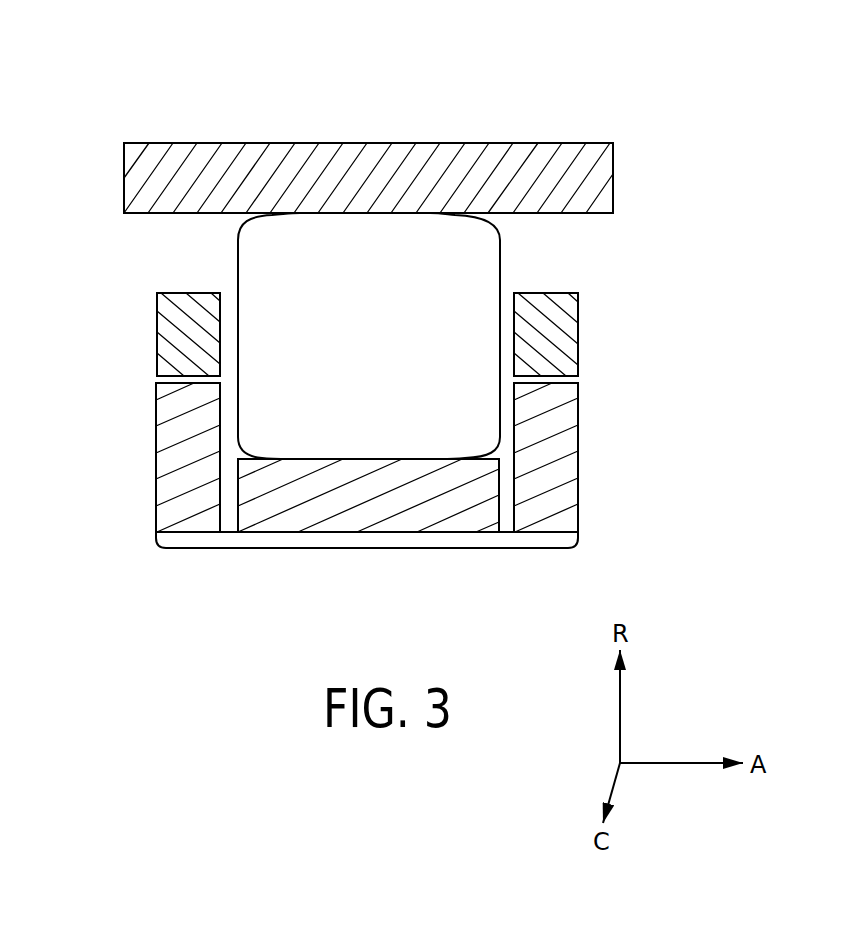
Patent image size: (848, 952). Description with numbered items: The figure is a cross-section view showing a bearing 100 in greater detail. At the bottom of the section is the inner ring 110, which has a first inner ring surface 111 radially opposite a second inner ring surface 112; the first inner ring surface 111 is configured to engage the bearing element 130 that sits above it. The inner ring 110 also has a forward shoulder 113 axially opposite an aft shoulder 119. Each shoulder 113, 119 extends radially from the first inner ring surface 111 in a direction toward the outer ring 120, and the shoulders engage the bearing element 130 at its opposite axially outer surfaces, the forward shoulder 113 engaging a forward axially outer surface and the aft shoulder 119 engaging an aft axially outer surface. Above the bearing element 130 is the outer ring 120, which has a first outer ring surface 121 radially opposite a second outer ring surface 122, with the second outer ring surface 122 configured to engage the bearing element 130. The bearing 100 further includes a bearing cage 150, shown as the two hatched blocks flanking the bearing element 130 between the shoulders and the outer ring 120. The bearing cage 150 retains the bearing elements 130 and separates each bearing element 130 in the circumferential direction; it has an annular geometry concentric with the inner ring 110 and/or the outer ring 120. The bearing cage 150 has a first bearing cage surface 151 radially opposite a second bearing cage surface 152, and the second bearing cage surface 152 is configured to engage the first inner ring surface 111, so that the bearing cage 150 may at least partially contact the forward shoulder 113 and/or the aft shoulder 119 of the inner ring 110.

The bearing 100 is at (150, 92).
The inner ring 110 is at (373, 498).
The first inner ring surface 111 is at (303, 459).
The second inner ring surface 112 is at (449, 548).
The forward shoulder 113 is at (163, 457).
The aft shoulder 119 is at (571, 445).
The outer ring 120 is at (393, 173).
The first outer ring surface 121 is at (212, 143).
The second outer ring surface 122 is at (312, 213).
The bearing element 130 is at (386, 347).
The bearing cage 150 is at (548, 330).
The first bearing cage surface 151 is at (197, 293).
The second bearing cage surface 152 is at (190, 376).